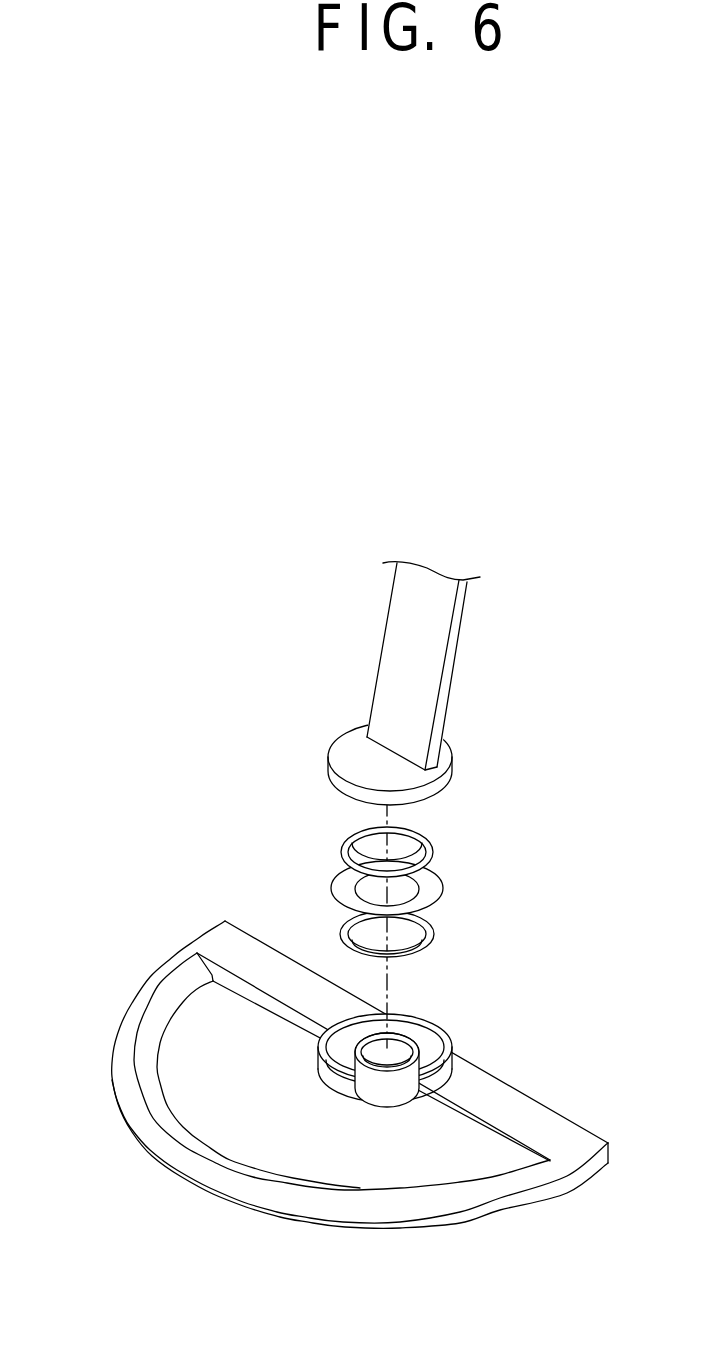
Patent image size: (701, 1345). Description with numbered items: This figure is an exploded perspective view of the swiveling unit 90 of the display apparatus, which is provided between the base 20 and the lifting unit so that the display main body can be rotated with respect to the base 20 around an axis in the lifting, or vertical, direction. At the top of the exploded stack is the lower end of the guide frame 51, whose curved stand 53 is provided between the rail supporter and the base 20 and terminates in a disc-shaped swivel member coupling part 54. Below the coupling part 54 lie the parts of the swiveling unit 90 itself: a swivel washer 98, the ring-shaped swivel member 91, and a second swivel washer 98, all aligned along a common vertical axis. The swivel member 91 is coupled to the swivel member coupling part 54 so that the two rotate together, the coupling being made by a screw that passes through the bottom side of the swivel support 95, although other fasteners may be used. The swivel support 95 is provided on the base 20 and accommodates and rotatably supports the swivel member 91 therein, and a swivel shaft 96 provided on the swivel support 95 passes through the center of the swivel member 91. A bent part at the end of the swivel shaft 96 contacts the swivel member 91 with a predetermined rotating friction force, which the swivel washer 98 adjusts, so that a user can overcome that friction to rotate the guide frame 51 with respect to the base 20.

The base 20 is at (508, 1203).
The guide frame 51 is at (476, 683).
The curved stand 53 is at (564, 757).
The swivel member coupling part 54 is at (452, 757).
The swiveling unit 90 is at (196, 789).
The swivel member 91 is at (443, 885).
The swivel support 95 is at (342, 1040).
The swivel shaft 96 is at (397, 1072).
The swivel washer 98 is at (442, 892).